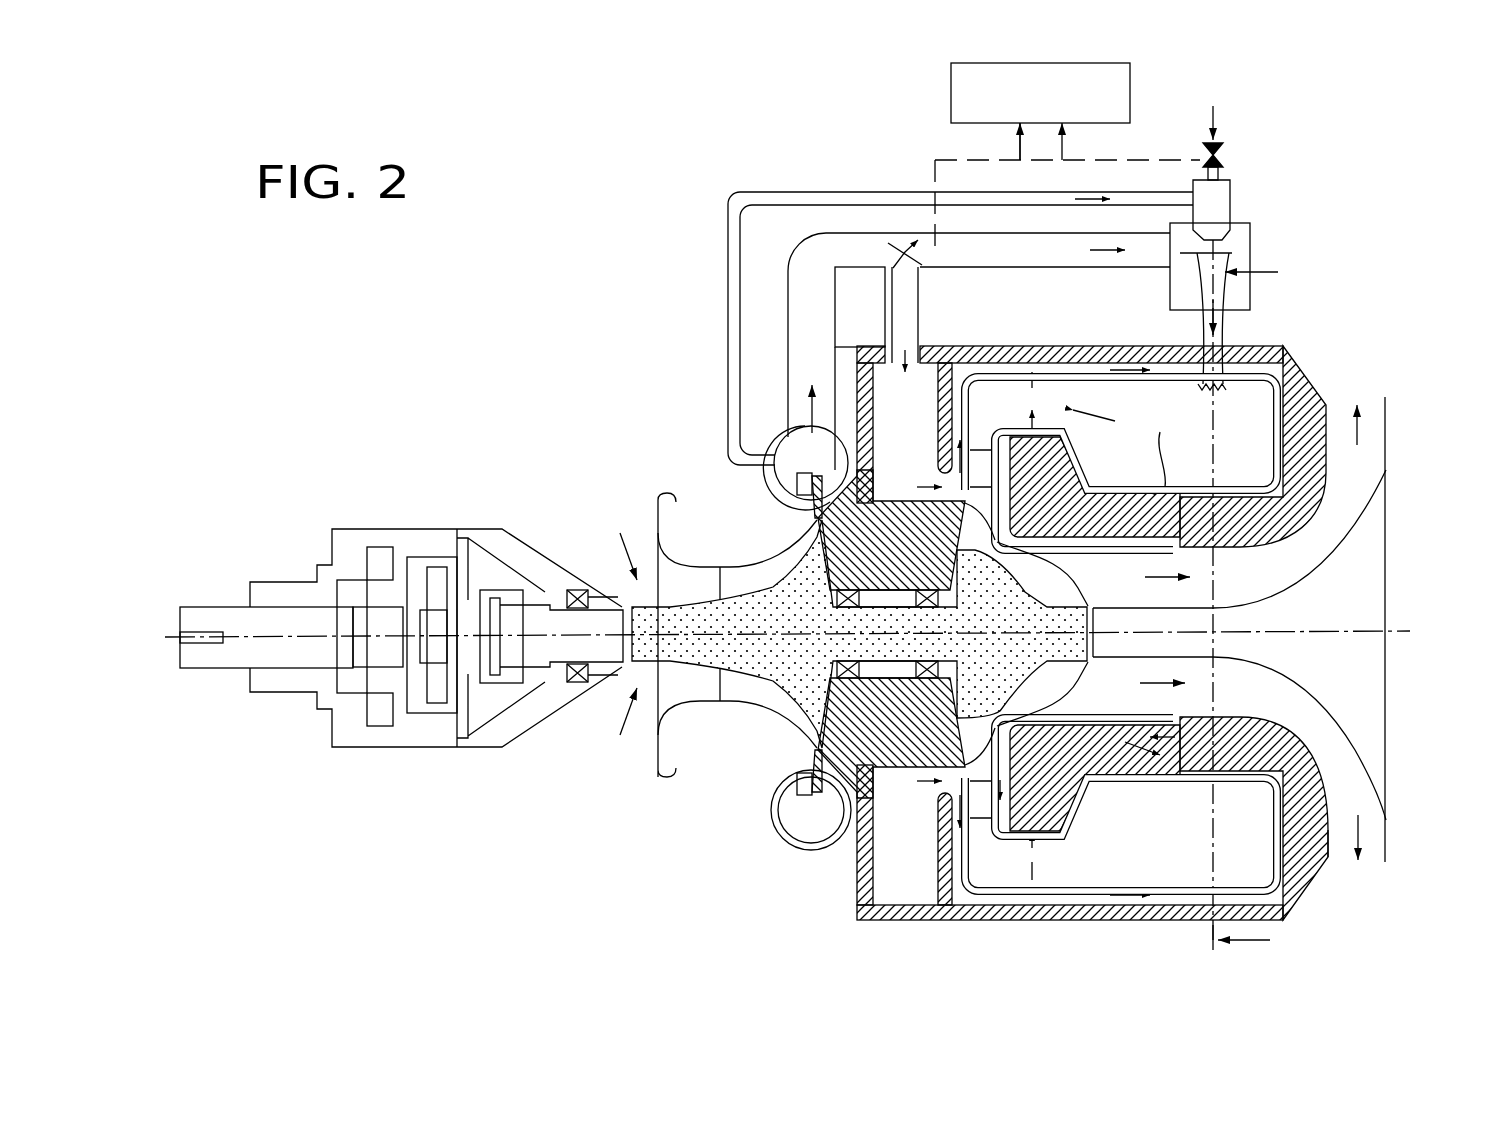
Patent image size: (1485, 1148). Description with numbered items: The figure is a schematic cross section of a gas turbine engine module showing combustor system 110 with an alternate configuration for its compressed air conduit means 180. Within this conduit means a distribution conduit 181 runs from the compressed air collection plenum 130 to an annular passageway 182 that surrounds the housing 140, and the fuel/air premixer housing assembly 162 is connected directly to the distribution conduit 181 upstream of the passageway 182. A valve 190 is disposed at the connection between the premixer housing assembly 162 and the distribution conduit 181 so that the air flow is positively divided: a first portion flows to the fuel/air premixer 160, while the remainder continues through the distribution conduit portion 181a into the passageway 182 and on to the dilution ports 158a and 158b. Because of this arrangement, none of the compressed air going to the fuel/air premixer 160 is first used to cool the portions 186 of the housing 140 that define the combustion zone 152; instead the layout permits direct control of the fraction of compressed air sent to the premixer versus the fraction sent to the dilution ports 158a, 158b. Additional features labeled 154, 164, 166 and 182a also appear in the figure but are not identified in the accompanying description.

The combustor system 110 is at (848, 145).
The compressed air collection plenum 130 is at (776, 433).
The housing 140 is at (1282, 463).
The combustion zone 152 is at (1160, 831).
The combustor cavity 154 is at (1257, 866).
The dilution port 158a is at (1025, 384).
The dilution port 158b is at (1030, 428).
The fuel/air premixer 160 is at (1346, 238).
The fuel/air premixer housing assembly 162 is at (985, 268).
The fuel valve body 164 is at (1236, 212).
The fuel control valve 166 is at (1222, 125).
The compressed air conduit means 180 is at (748, 145).
The distribution conduit 181 is at (787, 293).
The distribution conduit portion 181a is at (880, 302).
The annular passageway 182 is at (1083, 347).
The turbine inlet shroud 182a is at (1103, 549).
The housing portions 186 is at (1270, 428).
The damper valve 190 is at (897, 247).